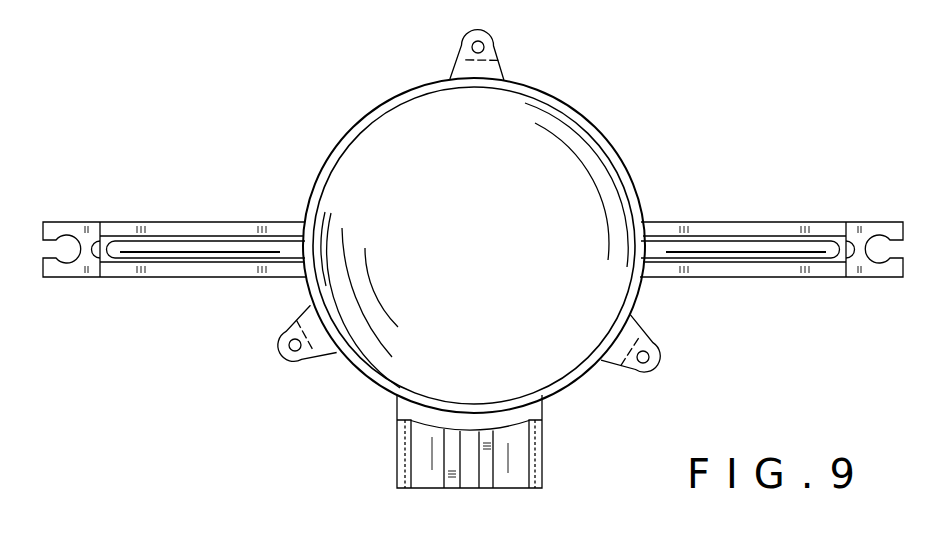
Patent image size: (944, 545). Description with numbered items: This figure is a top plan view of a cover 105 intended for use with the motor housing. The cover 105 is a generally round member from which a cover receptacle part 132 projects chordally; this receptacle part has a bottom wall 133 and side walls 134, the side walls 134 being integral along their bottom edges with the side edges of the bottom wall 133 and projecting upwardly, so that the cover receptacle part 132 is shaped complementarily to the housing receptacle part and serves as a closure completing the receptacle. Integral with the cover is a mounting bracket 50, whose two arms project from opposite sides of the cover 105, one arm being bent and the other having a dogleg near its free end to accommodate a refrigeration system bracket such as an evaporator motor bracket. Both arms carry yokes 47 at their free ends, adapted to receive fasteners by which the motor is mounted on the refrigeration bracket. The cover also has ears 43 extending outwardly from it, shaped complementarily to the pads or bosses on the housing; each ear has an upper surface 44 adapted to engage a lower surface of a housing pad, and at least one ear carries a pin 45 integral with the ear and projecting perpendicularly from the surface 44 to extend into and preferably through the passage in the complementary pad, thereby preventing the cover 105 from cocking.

The cover 105 is at (565, 143).
The ears 43 is at (497, 62).
The upper surfaces 44 is at (453, 62).
The pin 45 is at (483, 42).
The yokes 47 is at (58, 272).
The mounting bracket 50 is at (793, 212).
The cover receptacle part 132 is at (556, 434).
The bottom wall 133 is at (517, 475).
The side walls 134 is at (398, 443).